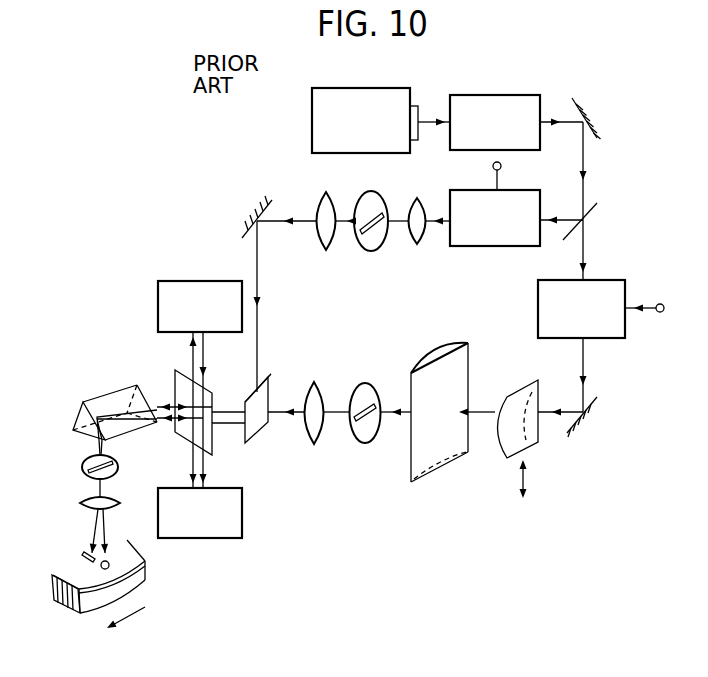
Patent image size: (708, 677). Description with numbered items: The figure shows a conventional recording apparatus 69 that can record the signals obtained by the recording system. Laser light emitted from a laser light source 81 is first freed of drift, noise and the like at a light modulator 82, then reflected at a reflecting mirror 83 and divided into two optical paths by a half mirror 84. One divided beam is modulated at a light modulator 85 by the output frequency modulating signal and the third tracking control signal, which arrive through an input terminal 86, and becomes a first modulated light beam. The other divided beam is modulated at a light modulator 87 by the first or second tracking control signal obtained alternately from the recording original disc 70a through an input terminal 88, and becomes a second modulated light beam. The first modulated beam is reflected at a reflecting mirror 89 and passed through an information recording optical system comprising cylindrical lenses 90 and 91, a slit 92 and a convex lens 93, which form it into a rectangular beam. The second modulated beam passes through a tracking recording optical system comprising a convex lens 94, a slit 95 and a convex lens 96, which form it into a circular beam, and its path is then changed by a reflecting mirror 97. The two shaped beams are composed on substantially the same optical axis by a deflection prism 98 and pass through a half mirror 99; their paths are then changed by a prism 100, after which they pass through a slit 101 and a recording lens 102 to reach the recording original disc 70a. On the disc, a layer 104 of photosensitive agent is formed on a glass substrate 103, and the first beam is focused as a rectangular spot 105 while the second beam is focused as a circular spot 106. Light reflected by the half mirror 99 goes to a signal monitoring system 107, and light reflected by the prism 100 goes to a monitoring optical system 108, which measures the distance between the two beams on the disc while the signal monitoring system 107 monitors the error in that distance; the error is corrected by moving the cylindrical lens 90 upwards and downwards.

The recording apparatus 69 is at (231, 135).
The laser light source 81 is at (355, 88).
The light modulator 82 is at (485, 95).
The reflecting mirror 83 is at (574, 102).
The half mirror 84 is at (593, 209).
The light modulator 85 is at (608, 280).
The input terminal 86 is at (658, 304).
The light modulator 87 is at (505, 248).
The input terminal 88 is at (501, 166).
The reflecting mirror 89 is at (589, 399).
The cylindrical lens 90 is at (519, 391).
The cylindrical lens 91 is at (437, 349).
The slit 92 is at (368, 385).
The convex lens 93 is at (318, 385).
The convex lens 94 is at (420, 240).
The slit 95 is at (380, 247).
The convex lens 96 is at (332, 243).
The reflecting mirror 97 is at (268, 206).
The deflection prism 98 is at (268, 386).
The half mirror 99 is at (212, 435).
The prism 100 is at (98, 394).
The slit 101 is at (119, 464).
The recording lens 102 is at (90, 502).
The glass substrate 103 is at (88, 610).
The layer of photosensitive agent 104 is at (140, 568).
The rectangular spot 105 is at (86, 554).
The circular spot 106 is at (108, 561).
The signal monitoring system 107 is at (199, 281).
The monitoring optical system 108 is at (243, 515).
The recording original disc 70a is at (67, 606).